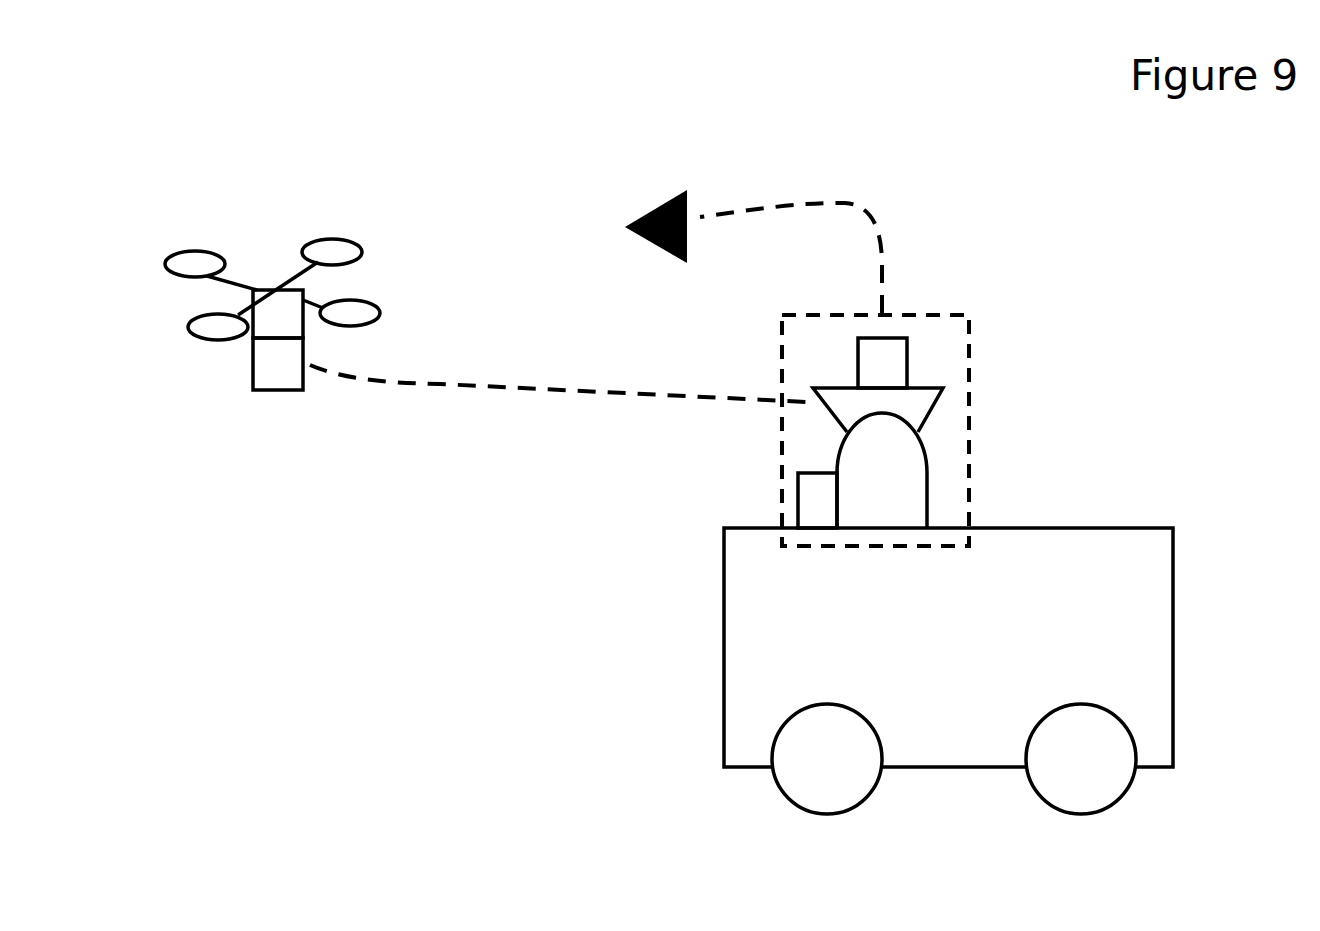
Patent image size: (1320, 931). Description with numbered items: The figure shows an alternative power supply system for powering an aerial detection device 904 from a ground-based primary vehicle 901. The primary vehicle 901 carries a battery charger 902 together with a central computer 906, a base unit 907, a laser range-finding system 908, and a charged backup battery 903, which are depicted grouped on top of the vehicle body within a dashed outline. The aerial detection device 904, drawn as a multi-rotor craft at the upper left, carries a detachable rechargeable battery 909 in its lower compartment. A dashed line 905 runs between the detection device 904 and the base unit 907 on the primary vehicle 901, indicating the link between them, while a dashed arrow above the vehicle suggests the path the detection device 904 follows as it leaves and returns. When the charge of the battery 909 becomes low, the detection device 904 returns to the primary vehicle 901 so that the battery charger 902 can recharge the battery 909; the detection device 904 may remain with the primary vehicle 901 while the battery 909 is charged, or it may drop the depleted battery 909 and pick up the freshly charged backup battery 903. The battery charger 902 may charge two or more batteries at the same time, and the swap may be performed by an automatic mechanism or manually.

The primary vehicle 901 is at (998, 671).
The battery charger 902 is at (913, 402).
The charged backup battery 903 is at (882, 363).
The aerial detection device 904 is at (310, 272).
The communication link 905 is at (500, 388).
The central computer 906 is at (902, 477).
The base unit 907 is at (965, 488).
The laser range-finding system 908 is at (813, 503).
The detachable rechargeable battery 909 is at (277, 363).